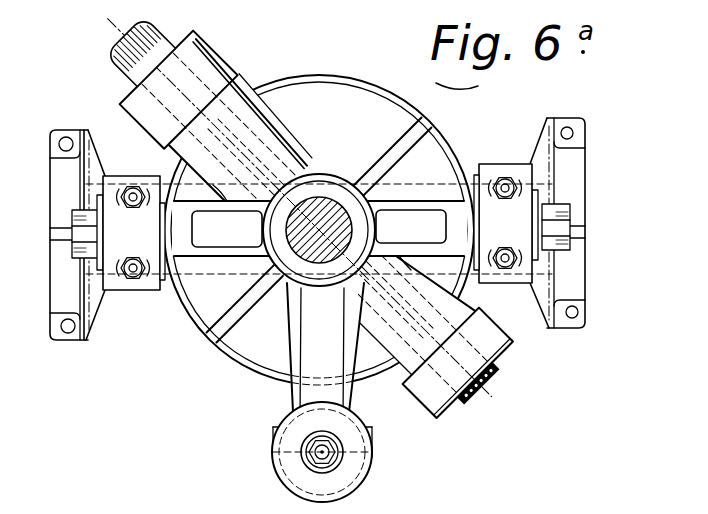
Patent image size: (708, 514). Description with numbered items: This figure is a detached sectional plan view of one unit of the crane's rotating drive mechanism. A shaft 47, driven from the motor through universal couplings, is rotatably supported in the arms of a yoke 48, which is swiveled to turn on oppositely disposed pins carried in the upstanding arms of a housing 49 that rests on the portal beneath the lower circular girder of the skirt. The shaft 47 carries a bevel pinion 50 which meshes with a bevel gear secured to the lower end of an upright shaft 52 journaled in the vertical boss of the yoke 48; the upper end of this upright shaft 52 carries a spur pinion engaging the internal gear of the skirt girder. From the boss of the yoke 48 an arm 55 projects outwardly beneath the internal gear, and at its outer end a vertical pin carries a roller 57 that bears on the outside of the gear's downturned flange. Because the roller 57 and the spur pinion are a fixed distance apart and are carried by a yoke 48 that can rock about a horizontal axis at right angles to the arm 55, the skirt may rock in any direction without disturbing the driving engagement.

The shaft 47 is at (172, 30).
The yoke 48 is at (281, 125).
The housing 49 is at (146, 292).
The bevel pinion 50 is at (273, 76).
The upright shaft 52 is at (330, 203).
The arm 55 is at (292, 393).
The roller 57 is at (290, 491).